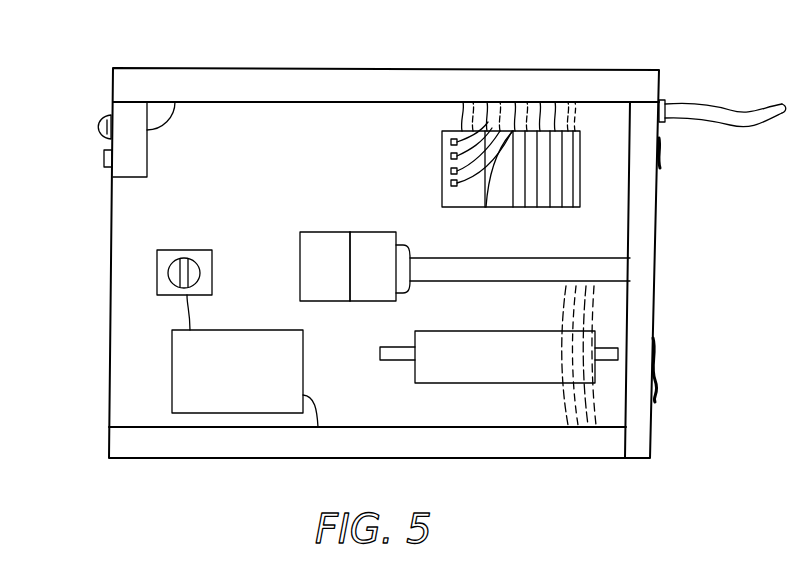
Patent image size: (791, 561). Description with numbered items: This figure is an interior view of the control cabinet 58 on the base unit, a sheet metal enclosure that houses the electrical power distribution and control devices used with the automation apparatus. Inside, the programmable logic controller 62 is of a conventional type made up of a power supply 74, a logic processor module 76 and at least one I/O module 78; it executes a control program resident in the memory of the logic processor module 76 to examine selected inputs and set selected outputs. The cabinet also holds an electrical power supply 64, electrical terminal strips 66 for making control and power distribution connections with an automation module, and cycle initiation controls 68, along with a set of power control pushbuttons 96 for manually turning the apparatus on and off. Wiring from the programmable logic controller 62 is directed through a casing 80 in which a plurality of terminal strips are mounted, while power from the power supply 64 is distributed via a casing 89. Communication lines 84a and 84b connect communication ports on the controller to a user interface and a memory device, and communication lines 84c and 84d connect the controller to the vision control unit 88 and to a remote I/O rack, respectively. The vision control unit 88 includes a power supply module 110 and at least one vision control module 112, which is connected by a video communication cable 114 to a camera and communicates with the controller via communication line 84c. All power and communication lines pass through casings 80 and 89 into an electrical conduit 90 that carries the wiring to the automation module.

The control cabinet 58 is at (655, 413).
The programmable logic controller 62 is at (438, 157).
The electrical power supply 64 is at (254, 388).
The electrical terminal strips 66 is at (515, 369).
The cycle initiation controls 68 is at (146, 154).
The power supply 74 is at (497, 200).
The logic processor module 76 is at (445, 197).
The I/O module 78 is at (568, 200).
The casing 80 is at (397, 98).
The communication line 84a is at (455, 118).
The communication line 84b is at (470, 128).
The communication line 84c is at (490, 128).
The communication line 84d is at (518, 128).
The vision control unit 88 is at (333, 228).
The casing 89 is at (386, 455).
The electrical conduit 90 is at (697, 106).
The power control pushbuttons 96 is at (96, 122).
The power supply module 110 is at (345, 285).
The vision control module 112 is at (393, 285).
The video communication cable 114 is at (408, 291).